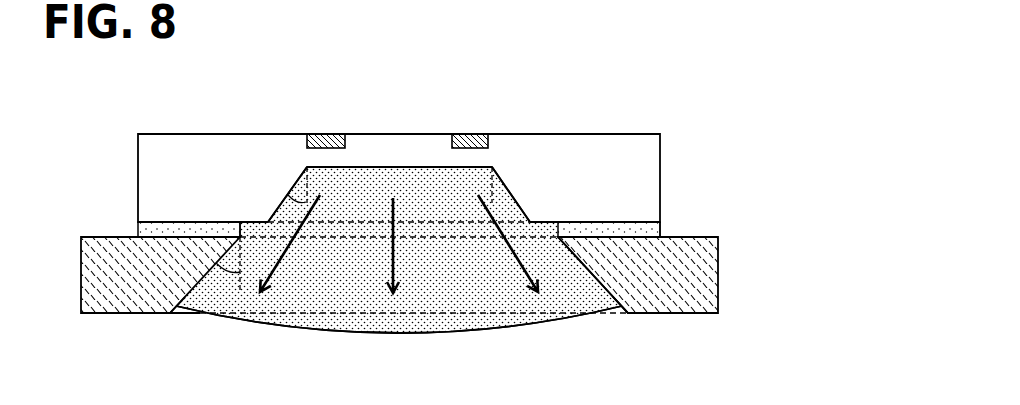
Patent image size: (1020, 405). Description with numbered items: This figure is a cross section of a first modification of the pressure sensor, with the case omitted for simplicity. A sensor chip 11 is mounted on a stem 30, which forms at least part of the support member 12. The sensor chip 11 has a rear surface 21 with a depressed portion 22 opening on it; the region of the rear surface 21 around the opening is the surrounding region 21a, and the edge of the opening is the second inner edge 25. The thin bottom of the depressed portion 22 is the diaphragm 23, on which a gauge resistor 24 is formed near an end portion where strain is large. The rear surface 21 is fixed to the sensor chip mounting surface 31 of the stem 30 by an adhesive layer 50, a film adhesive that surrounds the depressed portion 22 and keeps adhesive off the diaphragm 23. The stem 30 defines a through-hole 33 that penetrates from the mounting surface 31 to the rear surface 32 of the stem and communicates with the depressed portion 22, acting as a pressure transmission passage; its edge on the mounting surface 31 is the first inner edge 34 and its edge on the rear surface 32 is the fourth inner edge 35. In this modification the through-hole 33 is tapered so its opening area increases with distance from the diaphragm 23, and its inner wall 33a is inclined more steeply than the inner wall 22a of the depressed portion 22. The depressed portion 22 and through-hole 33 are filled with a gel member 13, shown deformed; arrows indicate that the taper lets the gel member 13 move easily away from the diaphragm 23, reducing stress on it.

The sensor chip 11 is at (660, 180).
The support member 12 is at (445, 275).
The gel member 13 is at (420, 331).
The rear surface 21 is at (176, 228).
The surrounding region 21a is at (217, 228).
The depressed portion 22 is at (363, 183).
The inner wall of the depressed portion 22a is at (512, 198).
The diaphragm 23 is at (407, 152).
The gauge resistor 24 is at (467, 143).
The second inner edge 25 is at (272, 219).
The stem 30 is at (698, 277).
The sensor chip mounting surface 31 is at (638, 233).
The rear surface of the stem 32 is at (653, 313).
The through-hole 33 is at (340, 287).
The inner wall of the through-hole 33a is at (592, 282).
The first inner edge 34 is at (548, 232).
The fourth inner edge 35 is at (170, 313).
The adhesive layer 50 is at (660, 230).